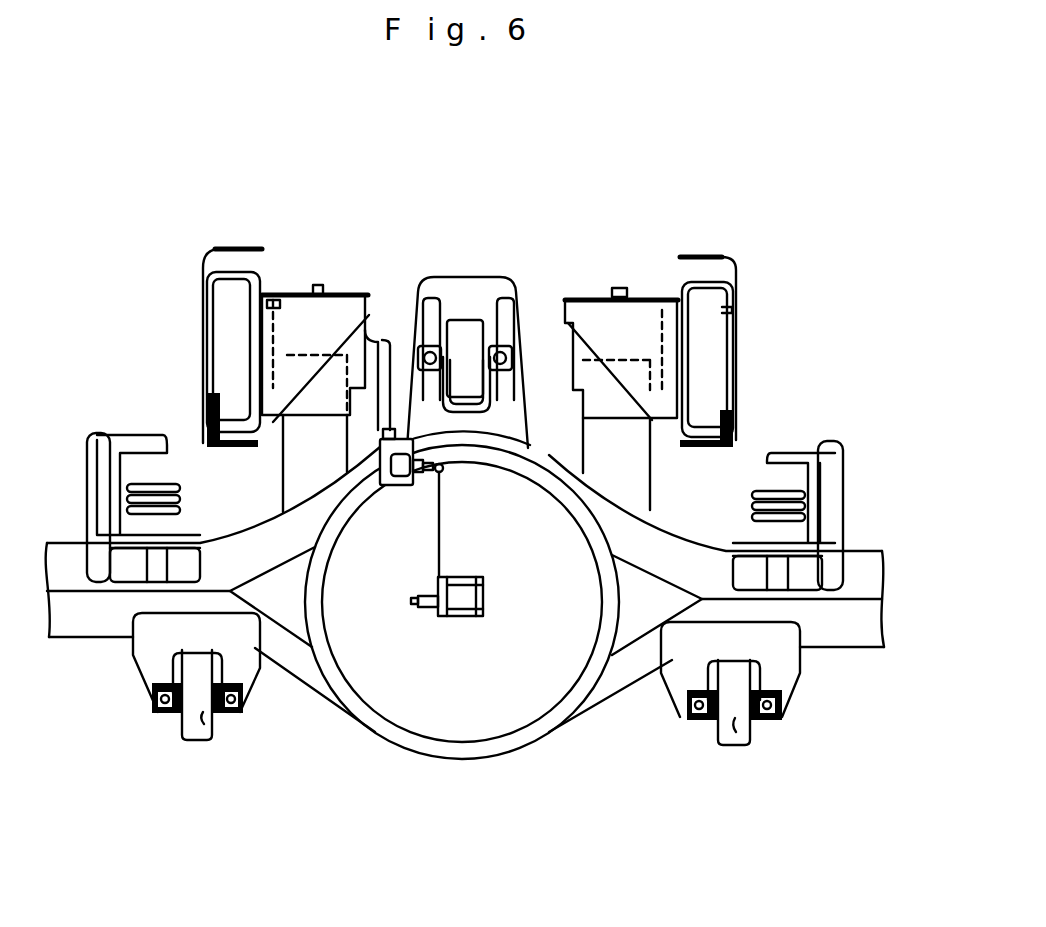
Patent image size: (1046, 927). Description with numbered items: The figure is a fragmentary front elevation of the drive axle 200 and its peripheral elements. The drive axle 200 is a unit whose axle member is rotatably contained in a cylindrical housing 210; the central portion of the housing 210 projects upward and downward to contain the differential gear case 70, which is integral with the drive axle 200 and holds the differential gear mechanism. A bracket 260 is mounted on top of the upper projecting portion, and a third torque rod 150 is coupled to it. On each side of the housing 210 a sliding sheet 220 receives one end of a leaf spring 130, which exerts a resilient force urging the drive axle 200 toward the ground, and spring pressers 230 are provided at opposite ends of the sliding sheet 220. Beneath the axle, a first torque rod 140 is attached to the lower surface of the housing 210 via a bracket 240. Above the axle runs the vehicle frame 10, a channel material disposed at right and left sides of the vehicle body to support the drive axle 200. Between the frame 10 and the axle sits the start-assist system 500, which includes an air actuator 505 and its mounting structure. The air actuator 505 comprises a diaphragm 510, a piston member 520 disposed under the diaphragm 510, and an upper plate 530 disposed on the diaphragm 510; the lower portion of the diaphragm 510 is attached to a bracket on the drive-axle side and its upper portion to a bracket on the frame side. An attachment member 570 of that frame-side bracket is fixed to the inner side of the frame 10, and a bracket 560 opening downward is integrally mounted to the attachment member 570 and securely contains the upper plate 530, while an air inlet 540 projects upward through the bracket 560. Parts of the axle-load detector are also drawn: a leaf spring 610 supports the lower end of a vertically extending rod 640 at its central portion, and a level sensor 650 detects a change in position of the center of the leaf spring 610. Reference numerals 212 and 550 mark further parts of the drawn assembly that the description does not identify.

The frame 10 is at (207, 258).
The differential gear case 70 is at (435, 667).
The leaf spring 130 is at (178, 453).
The first torque rod 140 is at (205, 715).
The third torque rod 150 is at (467, 340).
The drive axle 200 is at (585, 745).
The cylindrical housing 210 is at (328, 695).
The housing flange 212 is at (567, 450).
The sliding sheet 220 is at (173, 538).
The spring pressers 230 is at (836, 498).
The bracket 240 is at (150, 653).
The bracket 260 is at (528, 318).
The start-assist system 500 is at (303, 222).
The air actuator 505 is at (605, 324).
The diaphragm 510 is at (385, 340).
The piston member 520 is at (312, 403).
The upper plate 530 is at (290, 292).
The air inlet 540 is at (320, 284).
The right plate 550 is at (630, 482).
The bracket 560 is at (653, 297).
The attachment member 570 is at (233, 282).
The leaf spring 610 is at (463, 605).
The rod 640 is at (443, 518).
The level sensor 650 is at (370, 336).